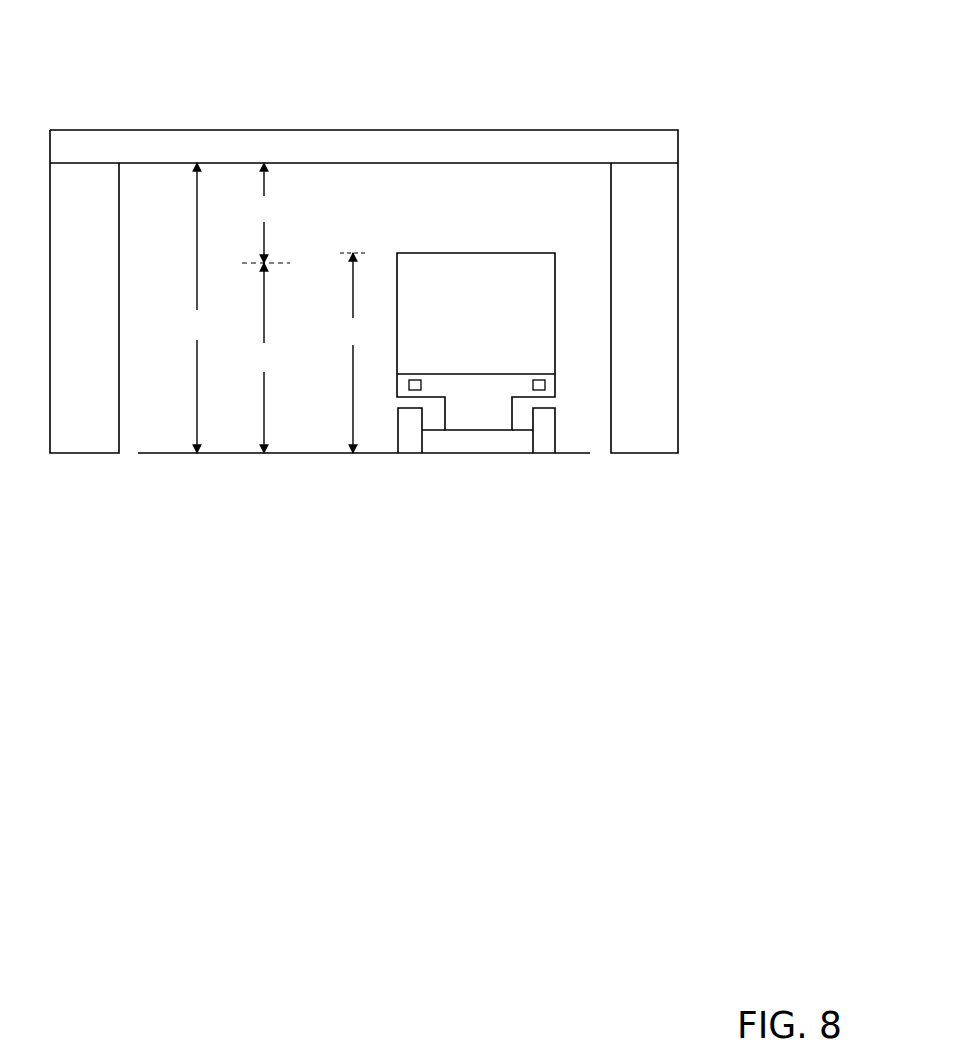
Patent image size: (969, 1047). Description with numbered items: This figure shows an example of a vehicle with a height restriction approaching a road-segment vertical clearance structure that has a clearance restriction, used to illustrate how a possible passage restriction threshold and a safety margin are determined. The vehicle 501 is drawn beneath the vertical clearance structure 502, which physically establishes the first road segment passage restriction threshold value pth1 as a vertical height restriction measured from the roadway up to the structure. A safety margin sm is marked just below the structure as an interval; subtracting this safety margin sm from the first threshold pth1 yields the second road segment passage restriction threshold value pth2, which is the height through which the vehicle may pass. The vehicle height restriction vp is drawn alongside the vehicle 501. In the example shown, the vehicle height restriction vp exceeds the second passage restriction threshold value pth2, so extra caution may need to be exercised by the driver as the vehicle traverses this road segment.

The vehicle 501 is at (512, 312).
The vertical clearance structure 502 is at (472, 145).
The first road segment passage restriction threshold value pth1 is at (197, 308).
The second road segment passage restriction threshold value pth2 is at (264, 358).
The safety margin sm is at (266, 213).
The vehicle height restriction vp is at (353, 353).